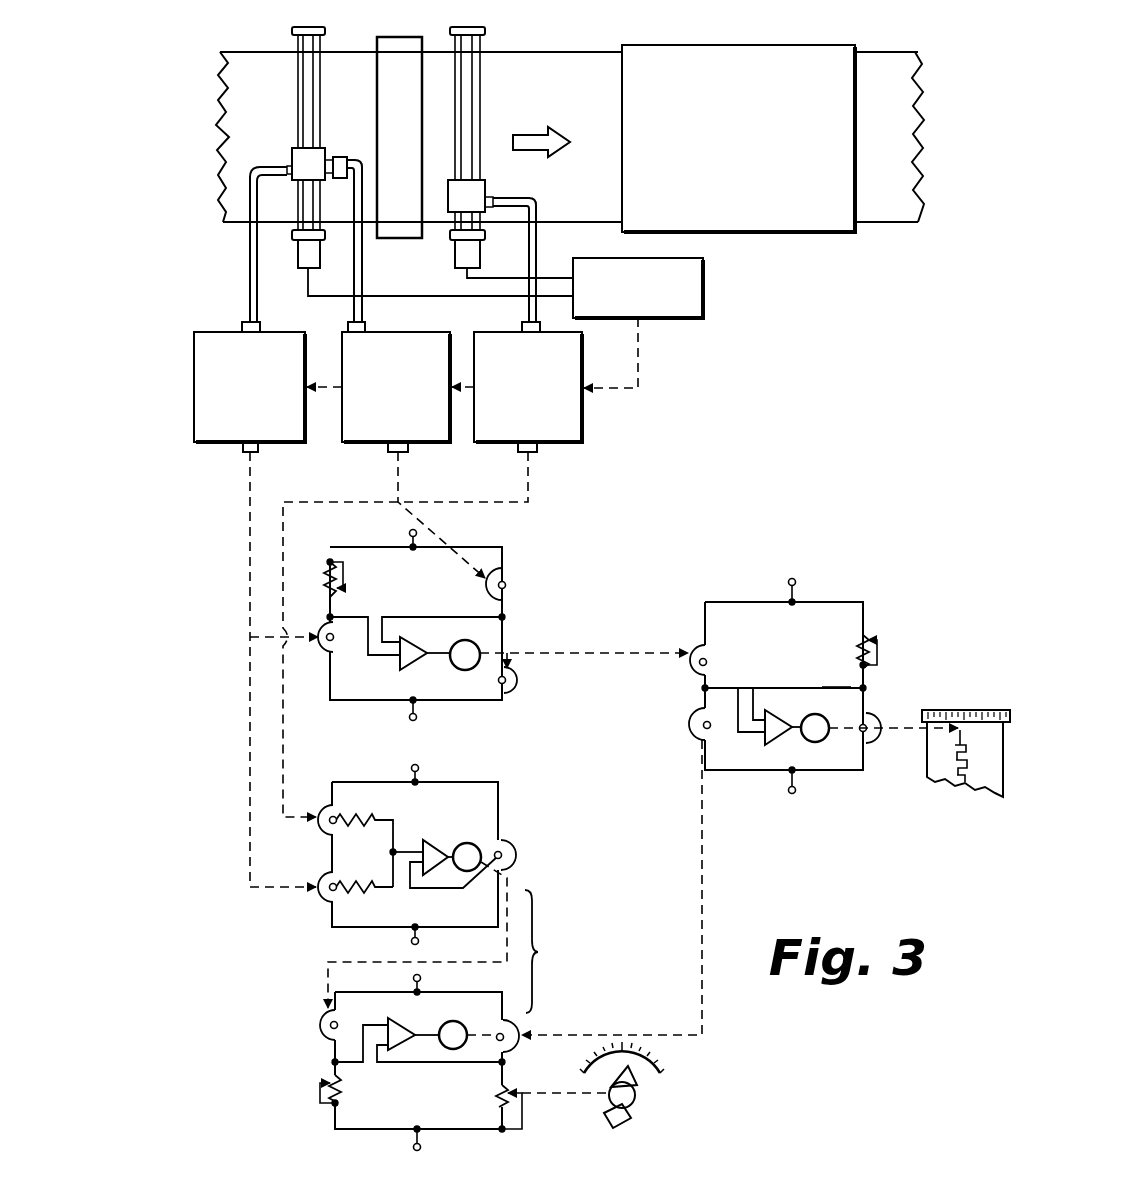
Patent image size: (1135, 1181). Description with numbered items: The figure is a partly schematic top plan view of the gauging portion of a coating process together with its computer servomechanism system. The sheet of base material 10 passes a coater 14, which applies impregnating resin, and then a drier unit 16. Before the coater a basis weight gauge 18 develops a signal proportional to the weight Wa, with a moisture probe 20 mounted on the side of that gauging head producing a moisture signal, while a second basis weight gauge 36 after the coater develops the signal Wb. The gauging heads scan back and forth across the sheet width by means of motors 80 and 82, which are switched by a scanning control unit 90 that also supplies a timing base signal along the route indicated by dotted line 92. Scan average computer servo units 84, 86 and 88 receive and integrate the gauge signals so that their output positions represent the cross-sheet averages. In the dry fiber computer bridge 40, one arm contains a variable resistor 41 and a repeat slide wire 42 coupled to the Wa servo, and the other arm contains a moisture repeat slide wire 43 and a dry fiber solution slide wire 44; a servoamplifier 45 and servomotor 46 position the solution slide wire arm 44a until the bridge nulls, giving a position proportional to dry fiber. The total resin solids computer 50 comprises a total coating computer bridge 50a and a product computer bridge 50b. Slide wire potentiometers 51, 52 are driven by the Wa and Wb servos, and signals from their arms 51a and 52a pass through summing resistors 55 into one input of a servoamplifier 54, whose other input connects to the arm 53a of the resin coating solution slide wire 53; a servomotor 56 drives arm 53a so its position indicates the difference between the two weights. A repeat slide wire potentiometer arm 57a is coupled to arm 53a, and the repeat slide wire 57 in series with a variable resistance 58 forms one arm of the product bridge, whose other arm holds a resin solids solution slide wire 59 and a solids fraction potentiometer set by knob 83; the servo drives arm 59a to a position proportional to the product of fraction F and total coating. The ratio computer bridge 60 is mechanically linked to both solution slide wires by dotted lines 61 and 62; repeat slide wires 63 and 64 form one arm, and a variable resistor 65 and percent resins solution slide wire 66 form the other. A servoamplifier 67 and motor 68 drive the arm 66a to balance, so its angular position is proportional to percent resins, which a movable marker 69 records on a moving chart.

The base material 10 is at (222, 130).
The coater 14 is at (400, 142).
The drier unit 16 is at (810, 233).
The basis weight gauge 18 is at (292, 150).
The moisture gauge 20 is at (342, 157).
The basis weight gauge 36 is at (487, 190).
The scanning motor 80 is at (298, 265).
The scanning motor 82 is at (455, 262).
The scan average computer servo unit 84 is at (207, 332).
The scan average computer servo unit 86 is at (440, 332).
The scan average computer servo unit 88 is at (583, 366).
The scanning control unit 90 is at (703, 292).
The dotted line 92 is at (640, 377).
The dry fiber computer bridge 40 is at (578, 644).
The variable resistor 41 is at (326, 582).
The repeat slide wire 42 is at (318, 655).
The moisture repeat slide wire 43 is at (483, 586).
The dry fiber solution slide wire 44 is at (519, 690).
The dry fiber solution slide wire arm 44a is at (519, 674).
The servoamplifier 45 is at (416, 648).
The servomotor 46 is at (458, 670).
The dotted line 61 is at (643, 652).
The ratio computer bridge 60 is at (789, 685).
The dotted line 62 is at (704, 814).
The repeat slide wire 63 is at (702, 650).
The repeat slide wire 64 is at (696, 717).
The variable resistor 65 is at (865, 640).
The percent resins solution slide wire potentiometer 66 is at (873, 720).
The percent resins solution slide wire arm 66a is at (872, 742).
The servoamplifier 67 is at (781, 721).
The servomotor 68 is at (827, 722).
The movable marker 69 is at (963, 731).
The total resin solids computer 50 is at (590, 1004).
The total coating computer bridge 50a is at (477, 854).
The product computer bridge 50b is at (371, 1062).
The slide wire potentiometer 51 is at (323, 902).
The slide wire arm 51a is at (326, 895).
The slide wire potentiometer 52 is at (322, 830).
The slide wire arm 52a is at (326, 812).
The resin coating solution slide wire potentiometer 53 is at (510, 866).
The total coating solution slide wire arm 53a is at (509, 850).
The servoamplifier 54 is at (437, 848).
The summing resistors 55 is at (352, 862).
The servomotor 56 is at (472, 845).
The repeat slide wire 57 is at (318, 1031).
The repeat slide wire potentiometer arm 57a is at (330, 1024).
The variable resistance 58 is at (340, 1089).
The resin solids solution slide wire 59 is at (522, 1031).
The resin solids solution slide wire arm 59a is at (507, 1031).
The knob 83 is at (636, 1099).